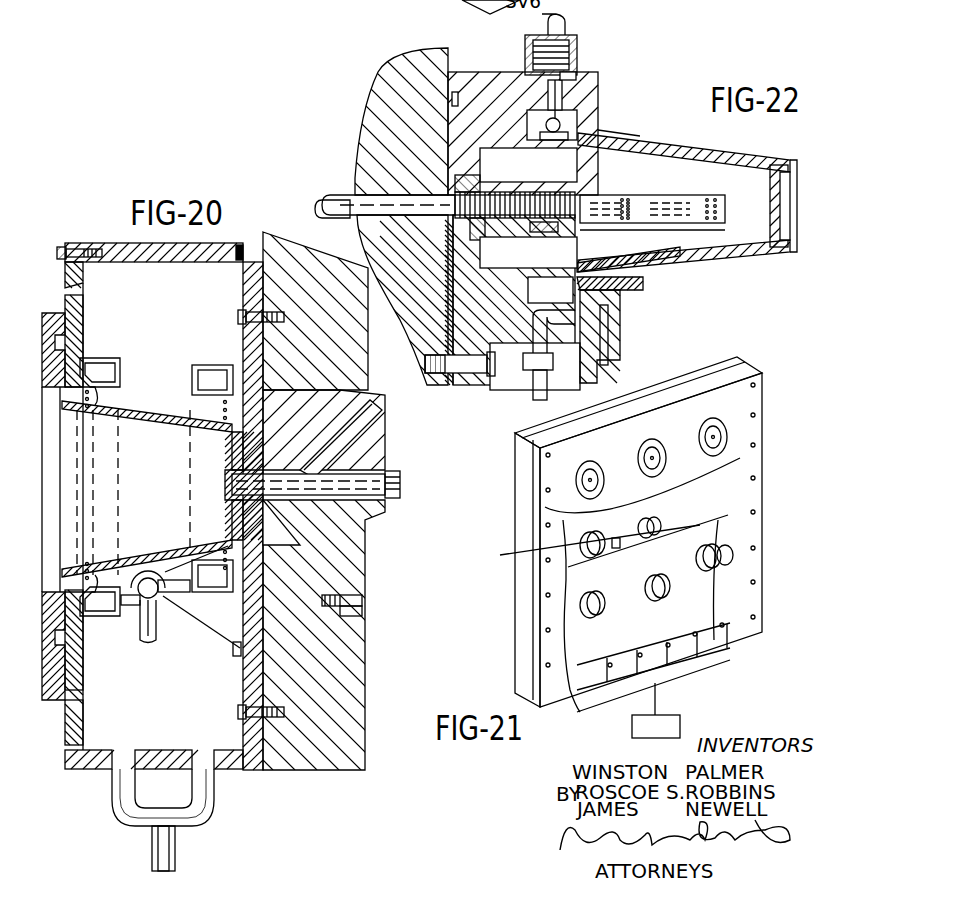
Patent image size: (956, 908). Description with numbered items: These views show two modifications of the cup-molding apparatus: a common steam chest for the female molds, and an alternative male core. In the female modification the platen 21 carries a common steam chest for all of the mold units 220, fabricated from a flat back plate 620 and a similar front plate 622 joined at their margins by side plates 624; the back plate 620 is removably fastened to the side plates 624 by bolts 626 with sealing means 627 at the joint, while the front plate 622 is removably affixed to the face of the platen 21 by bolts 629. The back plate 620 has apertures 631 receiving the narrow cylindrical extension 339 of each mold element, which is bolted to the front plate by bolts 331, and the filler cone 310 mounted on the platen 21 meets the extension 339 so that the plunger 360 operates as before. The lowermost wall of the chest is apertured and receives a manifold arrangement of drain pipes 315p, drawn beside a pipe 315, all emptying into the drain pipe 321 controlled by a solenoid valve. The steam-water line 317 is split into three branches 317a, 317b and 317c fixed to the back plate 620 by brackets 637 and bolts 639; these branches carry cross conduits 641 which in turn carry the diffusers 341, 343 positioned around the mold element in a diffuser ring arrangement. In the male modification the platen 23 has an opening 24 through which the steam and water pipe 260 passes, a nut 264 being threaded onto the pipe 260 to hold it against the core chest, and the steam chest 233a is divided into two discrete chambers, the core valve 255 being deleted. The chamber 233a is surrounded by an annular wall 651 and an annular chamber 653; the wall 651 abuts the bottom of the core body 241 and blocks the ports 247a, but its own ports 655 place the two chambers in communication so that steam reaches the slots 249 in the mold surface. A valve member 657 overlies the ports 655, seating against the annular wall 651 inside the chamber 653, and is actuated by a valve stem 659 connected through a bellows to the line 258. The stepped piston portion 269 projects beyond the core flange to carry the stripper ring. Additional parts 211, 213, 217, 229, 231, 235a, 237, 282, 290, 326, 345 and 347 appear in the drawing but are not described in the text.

In FIG. 20, the platen 21 is at (368, 350).
In FIG. 22, the platen 23 is at (428, 262).
In FIG. 22, the opening 24 is at (395, 195).
In FIG. 22, the mounting bolt 211 is at (450, 376).
In FIG. 22, the chamber 213 is at (495, 385).
In FIG. 22, the valve block 217 is at (472, 72).
In FIG. 21, the mold units 220 is at (700, 452).
In FIG. 22, the tee fitting 229 is at (575, 372).
In FIG. 22, the drain pipe 231 is at (530, 392).
In FIG. 22, the steam chest 233a is at (660, 246).
In FIG. 22, the manifold block 235a is at (500, 305).
In FIG. 22, the end block 237 is at (615, 370).
In FIG. 22, the core body 241 is at (712, 160).
In FIG. 22, the ports 247a is at (688, 132).
In FIG. 22, the slots 249 is at (765, 168).
In FIG. 22, the core valve 255 is at (640, 205).
In FIG. 22, the line 258 is at (559, 39).
In FIG. 22, the steam and water pipe 260 is at (448, 205).
In FIG. 22, the nut 264 is at (510, 195).
In FIG. 22, the stepped portion of piston 269 is at (622, 330).
In FIG. 22, the seal strip 282 is at (596, 275).
In FIG. 22, the shaft end 290 is at (336, 198).
In FIG. 20, the filler cone 310 is at (372, 555).
In FIG. 20, the drain pipe 315 is at (175, 856).
In FIG. 20, the drain pipes 315p is at (214, 806).
In FIG. 20, the steam-water line 317 is at (146, 640).
In FIG. 21, the branch line 317a is at (528, 640).
In FIG. 21, the branch line 317b is at (530, 577).
In FIG. 21, the branch line 317c is at (530, 503).
In FIG. 20, the drain pipe 321 is at (152, 845).
In FIG. 21, the drain pipe 321 is at (665, 708).
In FIG. 20, the sloped deflector plate 326 is at (145, 560).
In FIG. 20, the bolts 331 is at (116, 506).
In FIG. 20, the cylindrical extension 339 is at (225, 492).
In FIG. 20, the diffuser 341 is at (115, 372).
In FIG. 21, the diffuser 341 is at (670, 530).
In FIG. 20, the diffuser 343 is at (208, 378).
In FIG. 21, the diffuser 343 is at (585, 560).
In FIG. 20, the nozzle housing 345 is at (95, 392).
In FIG. 20, the orifices 347 is at (222, 402).
In FIG. 20, the plunger 360 is at (392, 472).
In FIG. 20, the back plate 620 is at (83, 316).
In FIG. 21, the back plate 620 is at (560, 705).
In FIG. 20, the front plate 622 is at (258, 278).
In FIG. 21, the front plate 622 is at (515, 525).
In FIG. 20, the side plates 624 is at (172, 262).
In FIG. 21, the side plates 624 is at (527, 670).
In FIG. 20, the bolts 626 is at (55, 250).
In FIG. 20, the sealing means 627 is at (83, 275).
In FIG. 20, the bolts 629 is at (280, 314).
In FIG. 21, the bolts 629 is at (565, 545).
In FIG. 20, the apertures 631 is at (268, 450).
In FIG. 20, the brackets 637 is at (206, 630).
In FIG. 21, the brackets 637 is at (690, 540).
In FIG. 20, the bolts 639 is at (240, 658).
In FIG. 20, the cross conduits 641 is at (128, 615).
In FIG. 22, the annular wall 651 is at (545, 275).
In FIG. 22, the annular chamber 653 is at (555, 306).
In FIG. 22, the ports 655 is at (578, 197).
In FIG. 22, the valve member 657 is at (575, 122).
In FIG. 22, the valve stem 659 is at (582, 82).